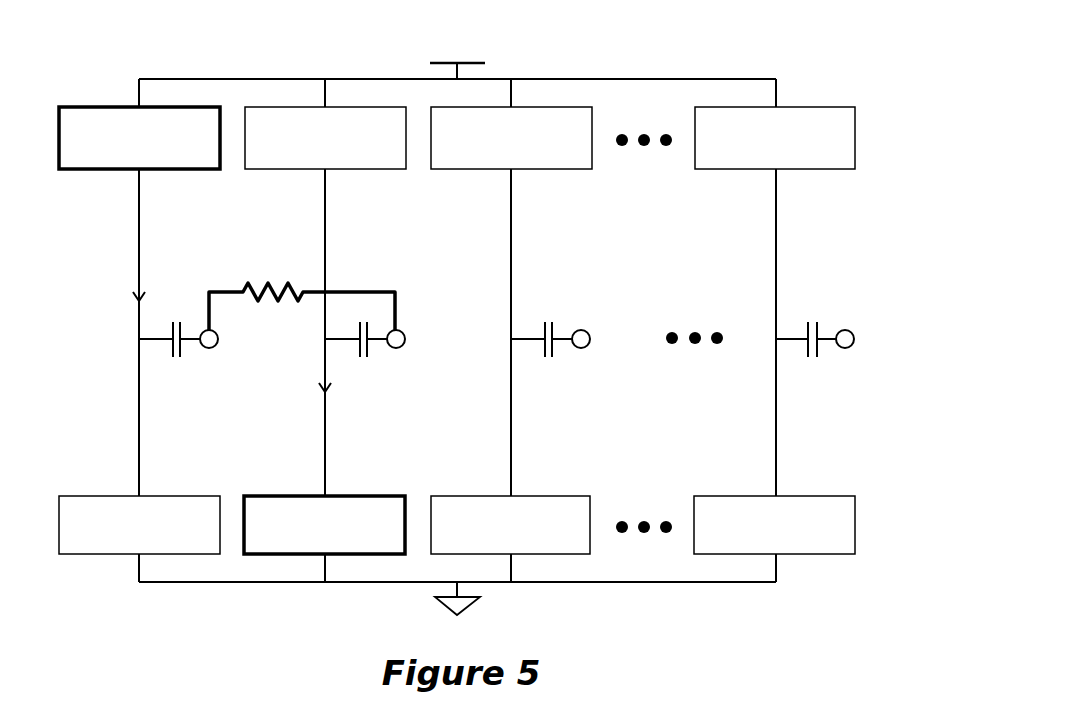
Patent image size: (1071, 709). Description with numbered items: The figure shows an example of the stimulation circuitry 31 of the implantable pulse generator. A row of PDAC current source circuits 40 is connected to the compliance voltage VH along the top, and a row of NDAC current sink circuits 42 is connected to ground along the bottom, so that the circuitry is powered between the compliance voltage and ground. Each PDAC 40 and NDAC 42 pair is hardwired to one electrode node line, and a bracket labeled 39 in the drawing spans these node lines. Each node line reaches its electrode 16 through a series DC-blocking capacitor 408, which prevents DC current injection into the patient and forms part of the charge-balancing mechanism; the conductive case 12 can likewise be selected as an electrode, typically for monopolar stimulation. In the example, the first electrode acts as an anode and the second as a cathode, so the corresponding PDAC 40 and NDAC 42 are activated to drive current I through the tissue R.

The stimulation circuitry 31 is at (816, 94).
The current source circuit (PDAC) 40 is at (457, 139).
The current sink circuit (NDAC) 42 is at (457, 526).
The electrode nodes 39 is at (810, 207).
The DC-blocking capacitor 408 is at (182, 393).
The electrode 16 is at (418, 324).
The conductive case (case electrode) 12 is at (888, 340).